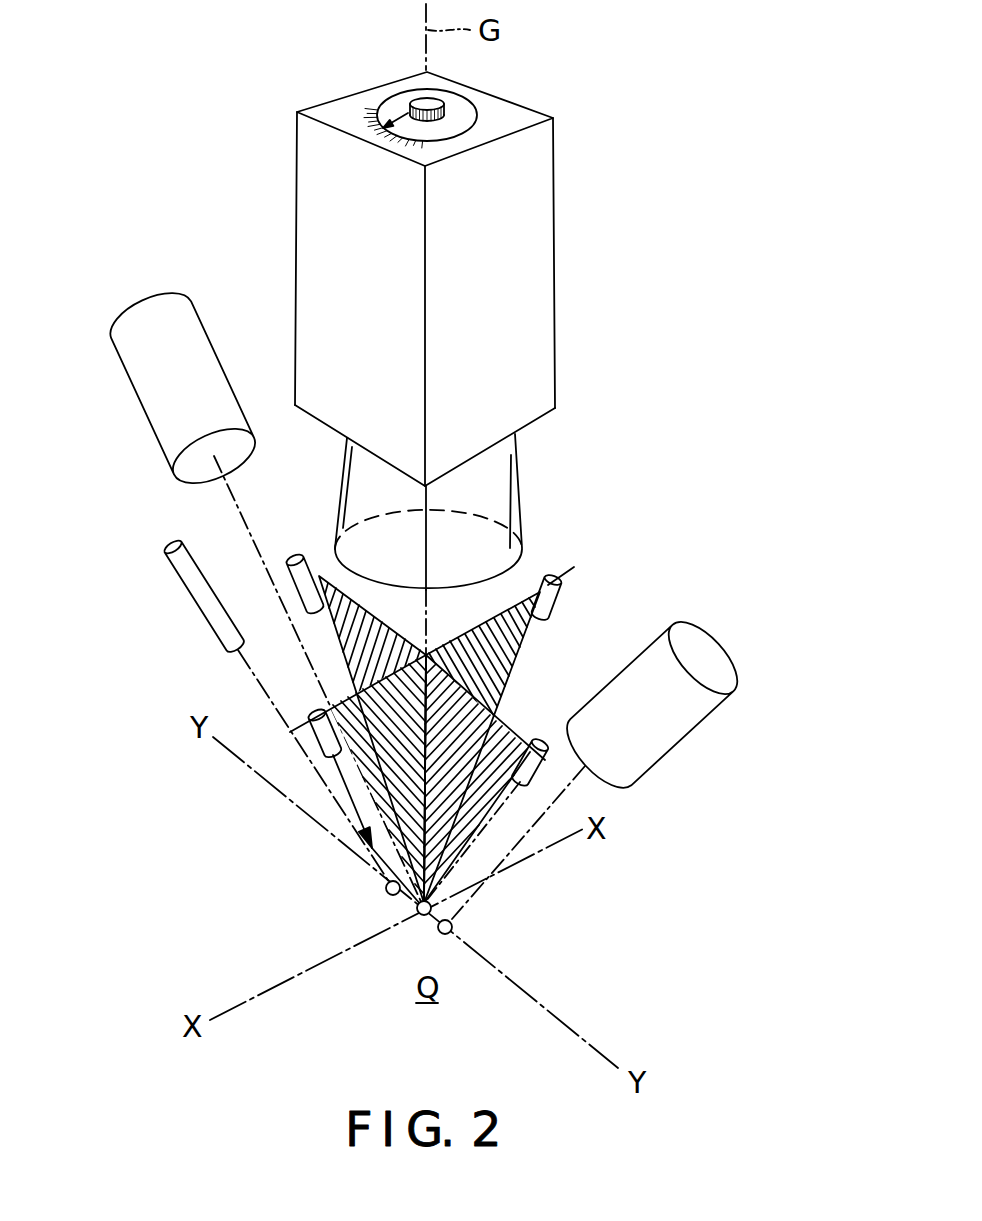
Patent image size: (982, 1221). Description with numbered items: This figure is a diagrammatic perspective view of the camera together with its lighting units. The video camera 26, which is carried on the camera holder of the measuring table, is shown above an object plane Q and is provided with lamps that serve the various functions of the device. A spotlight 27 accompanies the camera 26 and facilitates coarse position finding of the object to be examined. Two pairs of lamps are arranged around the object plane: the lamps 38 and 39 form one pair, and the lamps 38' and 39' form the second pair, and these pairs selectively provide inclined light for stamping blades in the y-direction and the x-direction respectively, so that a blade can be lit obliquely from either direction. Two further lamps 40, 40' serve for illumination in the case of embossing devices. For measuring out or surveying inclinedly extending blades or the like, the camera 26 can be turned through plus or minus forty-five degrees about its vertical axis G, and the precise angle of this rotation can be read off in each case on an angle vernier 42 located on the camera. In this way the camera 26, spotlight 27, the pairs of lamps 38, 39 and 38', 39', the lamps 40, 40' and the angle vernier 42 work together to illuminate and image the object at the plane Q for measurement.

The video camera 26 is at (592, 270).
The spotlight 27 is at (193, 588).
The lamp 38 is at (589, 580).
The lamp 38' is at (324, 807).
The lamp 39 is at (292, 544).
The lamp 39' is at (518, 771).
The lamp 40 is at (262, 571).
The lamp 40' is at (626, 770).
The angle vernier 42 is at (465, 112).